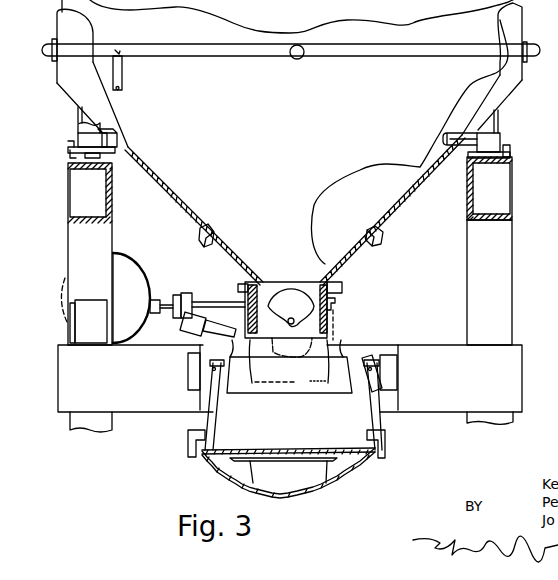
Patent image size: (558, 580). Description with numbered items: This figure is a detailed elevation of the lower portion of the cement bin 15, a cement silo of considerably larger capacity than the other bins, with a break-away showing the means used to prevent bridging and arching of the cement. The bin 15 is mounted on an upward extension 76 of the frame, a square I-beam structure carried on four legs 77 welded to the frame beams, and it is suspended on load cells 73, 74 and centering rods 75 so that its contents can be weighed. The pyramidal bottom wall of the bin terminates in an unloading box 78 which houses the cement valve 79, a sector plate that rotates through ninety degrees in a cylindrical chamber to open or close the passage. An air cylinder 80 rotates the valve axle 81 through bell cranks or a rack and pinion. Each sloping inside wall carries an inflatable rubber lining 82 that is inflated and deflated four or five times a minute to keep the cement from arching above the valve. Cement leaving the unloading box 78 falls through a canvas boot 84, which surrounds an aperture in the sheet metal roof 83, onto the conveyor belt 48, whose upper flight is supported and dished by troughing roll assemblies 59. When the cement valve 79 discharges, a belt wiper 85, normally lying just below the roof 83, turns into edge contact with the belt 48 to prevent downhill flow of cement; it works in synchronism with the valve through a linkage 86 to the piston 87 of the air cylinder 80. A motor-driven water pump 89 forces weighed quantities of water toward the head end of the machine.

The bin 15 is at (517, 32).
The load cell 73 is at (80, 110).
The load cell 74 is at (78, 128).
The centering rod 75 is at (462, 152).
The upward extension 76 is at (519, 163).
The leg 77 is at (68, 232).
The unloading box 78 is at (240, 293).
The cement valve 79 is at (340, 282).
The air cylinder 80 is at (193, 325).
The valve axle 81 is at (286, 319).
The inflatable rubber lining 82 is at (480, 87).
The roof 83 is at (380, 433).
The canvas boot 84 is at (305, 375).
The belt wiper 85 is at (330, 487).
The linkage 86 is at (330, 325).
The piston 87 is at (338, 298).
The motor-driven water pump 89 is at (72, 322).
The troughing roll assembly 59 is at (370, 372).
The belt 48 is at (355, 477).